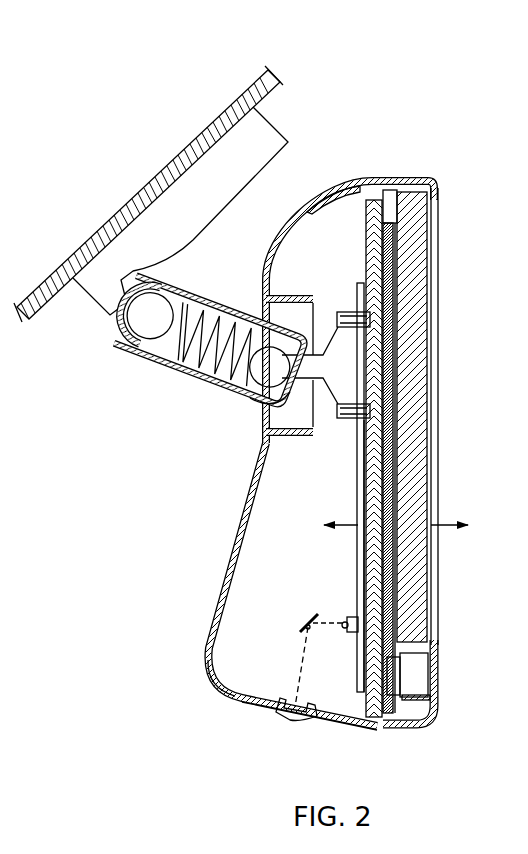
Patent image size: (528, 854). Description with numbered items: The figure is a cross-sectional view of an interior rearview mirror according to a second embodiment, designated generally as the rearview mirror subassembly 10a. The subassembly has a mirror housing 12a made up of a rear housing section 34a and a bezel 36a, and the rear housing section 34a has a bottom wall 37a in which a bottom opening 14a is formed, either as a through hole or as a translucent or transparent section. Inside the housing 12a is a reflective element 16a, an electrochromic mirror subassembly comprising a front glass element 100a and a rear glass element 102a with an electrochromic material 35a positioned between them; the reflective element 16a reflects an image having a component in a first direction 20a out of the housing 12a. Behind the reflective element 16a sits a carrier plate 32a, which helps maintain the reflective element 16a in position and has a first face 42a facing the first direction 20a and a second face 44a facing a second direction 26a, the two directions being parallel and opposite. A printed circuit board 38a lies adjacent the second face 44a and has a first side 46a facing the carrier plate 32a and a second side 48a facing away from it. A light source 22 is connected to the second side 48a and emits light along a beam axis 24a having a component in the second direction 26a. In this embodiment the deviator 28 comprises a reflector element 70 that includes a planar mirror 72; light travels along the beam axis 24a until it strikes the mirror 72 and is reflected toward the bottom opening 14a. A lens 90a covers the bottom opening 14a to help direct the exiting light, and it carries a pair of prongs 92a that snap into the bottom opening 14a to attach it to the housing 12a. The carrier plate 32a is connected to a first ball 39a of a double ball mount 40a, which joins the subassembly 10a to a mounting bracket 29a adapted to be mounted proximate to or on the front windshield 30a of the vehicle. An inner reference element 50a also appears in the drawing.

The rearview mirror subassembly 10a is at (463, 157).
The mirror housing 12a is at (403, 174).
The bottom opening 14a is at (280, 716).
The reflective element 16a is at (440, 228).
The first direction 20a is at (447, 523).
The light source 22 is at (338, 612).
The beam axis 24a is at (328, 627).
The second direction 26a is at (338, 530).
The deviator 28 is at (294, 619).
The mounting bracket 29a is at (282, 114).
The front windshield 30a is at (48, 314).
The carrier plate 32a is at (400, 394).
The rear housing section 34a is at (207, 638).
The electrochromic material 35a is at (413, 252).
The bezel 36a is at (417, 731).
The bottom wall 37a is at (254, 708).
The printed circuit board 38a is at (360, 486).
The first ball 39a is at (247, 402).
The double ball mount 40a is at (208, 368).
The first face 42a is at (397, 410).
The second face 44a is at (366, 233).
The first side 46a is at (393, 457).
The second side 48a is at (360, 466).
The rear wall 50a is at (428, 315).
The reflector element 70 is at (294, 631).
The mirror 72 is at (308, 626).
The lens 90a is at (298, 723).
The prongs 92a is at (247, 703).
The front glass element 100a is at (428, 583).
The rear glass element 102a is at (414, 603).